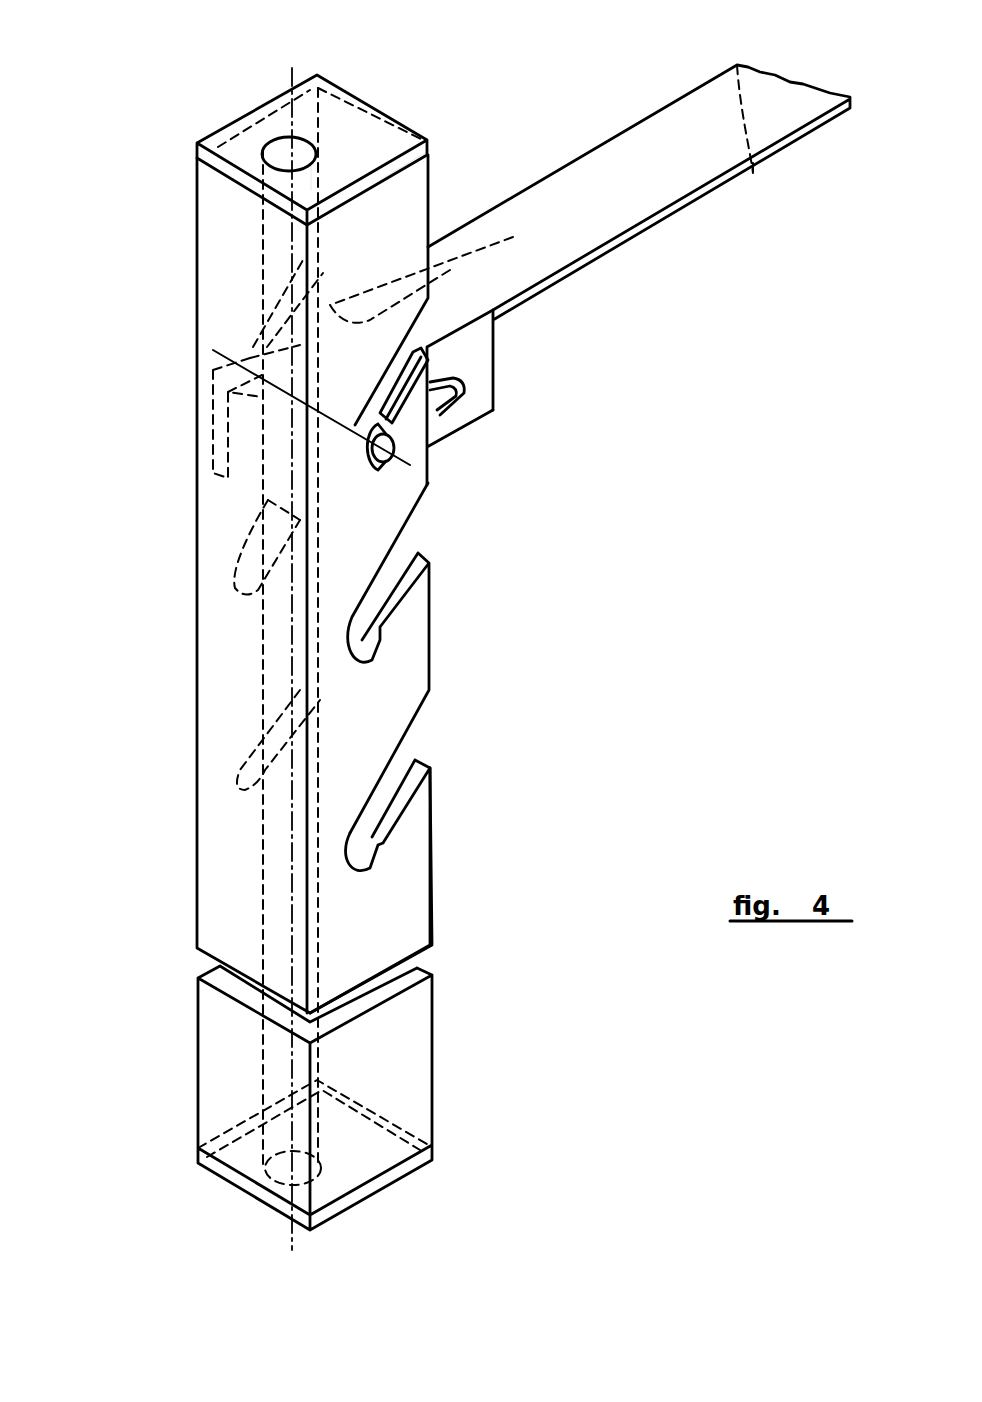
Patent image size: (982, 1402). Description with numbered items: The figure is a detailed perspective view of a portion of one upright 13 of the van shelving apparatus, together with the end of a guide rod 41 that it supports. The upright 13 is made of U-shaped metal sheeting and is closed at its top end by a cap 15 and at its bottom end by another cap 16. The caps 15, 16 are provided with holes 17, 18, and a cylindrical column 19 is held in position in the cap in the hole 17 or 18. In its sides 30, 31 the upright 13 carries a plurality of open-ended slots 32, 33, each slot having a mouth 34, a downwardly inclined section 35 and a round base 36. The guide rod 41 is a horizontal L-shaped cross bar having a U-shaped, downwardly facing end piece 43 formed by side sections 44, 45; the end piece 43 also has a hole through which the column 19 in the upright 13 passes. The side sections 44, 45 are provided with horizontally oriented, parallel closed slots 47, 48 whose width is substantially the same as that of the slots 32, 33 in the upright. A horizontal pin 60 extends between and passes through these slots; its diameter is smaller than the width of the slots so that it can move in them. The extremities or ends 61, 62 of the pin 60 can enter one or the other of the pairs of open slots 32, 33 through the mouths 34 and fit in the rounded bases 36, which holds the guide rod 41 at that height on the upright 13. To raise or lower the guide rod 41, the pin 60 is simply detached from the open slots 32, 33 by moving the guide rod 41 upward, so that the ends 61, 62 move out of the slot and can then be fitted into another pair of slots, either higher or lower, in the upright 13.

The upright 13 is at (197, 757).
The cap 15 is at (258, 131).
The cap 16 is at (257, 1193).
The hole 17 is at (310, 141).
The hole 18 is at (363, 1193).
The cylindrical column 19 is at (280, 148).
The side 30 is at (235, 240).
The side 31 is at (412, 203).
The open-ended slot 32 is at (407, 550).
The open-ended slot 33 is at (262, 505).
The mouth 34 is at (422, 740).
The downwardly inclined section 35 is at (388, 780).
The round base 36 is at (362, 842).
The guide rod 41 is at (708, 160).
The end piece 43 is at (472, 368).
The side section 44 is at (217, 463).
The side section 45 is at (470, 414).
The closed slot 47 is at (460, 378).
The closed slot 48 is at (444, 273).
The horizontal pin 60 is at (262, 505).
The end of pin 61 is at (400, 460).
The end of pin 62 is at (235, 357).